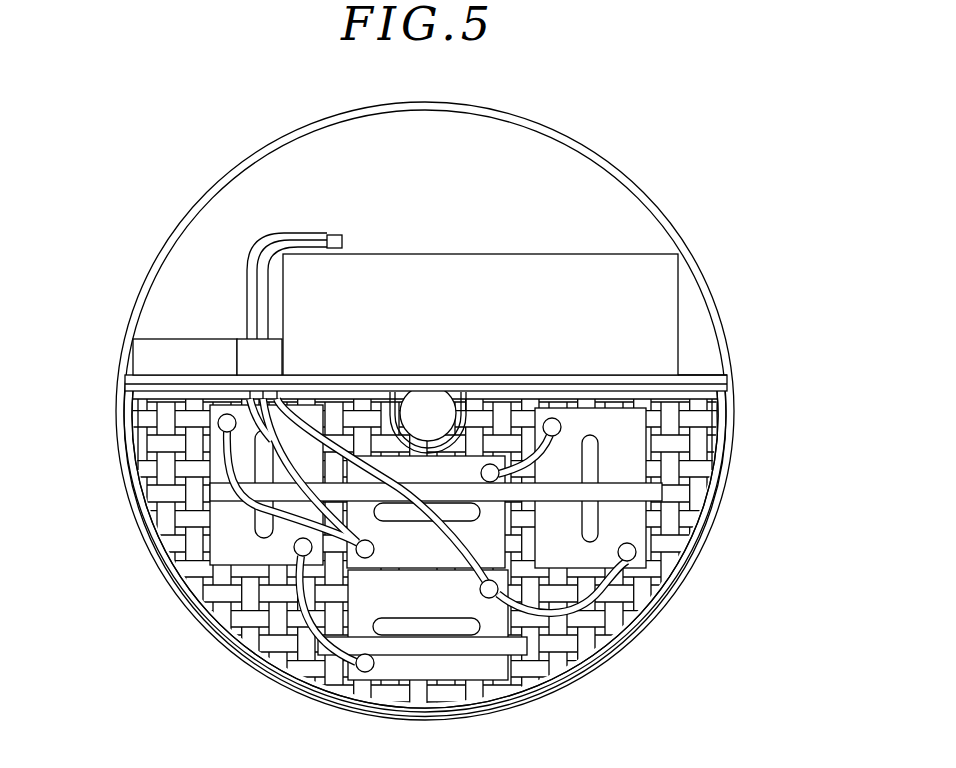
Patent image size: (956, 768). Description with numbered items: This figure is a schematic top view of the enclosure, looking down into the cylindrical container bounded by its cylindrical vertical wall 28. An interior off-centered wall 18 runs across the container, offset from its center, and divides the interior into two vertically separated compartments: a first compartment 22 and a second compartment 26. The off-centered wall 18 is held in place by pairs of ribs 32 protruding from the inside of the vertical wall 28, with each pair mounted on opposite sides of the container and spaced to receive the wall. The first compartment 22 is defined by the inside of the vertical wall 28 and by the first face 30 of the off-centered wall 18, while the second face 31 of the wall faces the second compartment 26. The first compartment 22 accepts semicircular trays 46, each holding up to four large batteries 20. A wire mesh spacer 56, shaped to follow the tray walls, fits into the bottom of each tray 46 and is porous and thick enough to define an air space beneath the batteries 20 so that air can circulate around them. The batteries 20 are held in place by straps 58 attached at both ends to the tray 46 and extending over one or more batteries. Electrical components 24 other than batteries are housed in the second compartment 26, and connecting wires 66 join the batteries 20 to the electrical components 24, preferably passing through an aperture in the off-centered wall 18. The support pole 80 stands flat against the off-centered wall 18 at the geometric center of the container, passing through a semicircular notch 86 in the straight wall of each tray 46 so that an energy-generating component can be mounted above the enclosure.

The off-centered wall 18 is at (175, 382).
The batteries 20 is at (637, 522).
The first compartment 22 is at (714, 500).
The electrical components 24 is at (657, 293).
The second compartment 26 is at (695, 318).
The cylindrical vertical wall 28 is at (576, 141).
The first face 30 is at (722, 470).
The second face 31 is at (683, 377).
The ribs 32 is at (130, 376).
The tray 46 is at (597, 650).
The wire mesh spacer 56 is at (245, 597).
The straps 58 is at (617, 496).
The connecting wires 66 is at (250, 272).
The pole 80 is at (436, 402).
The semicircular notch 86 is at (400, 420).